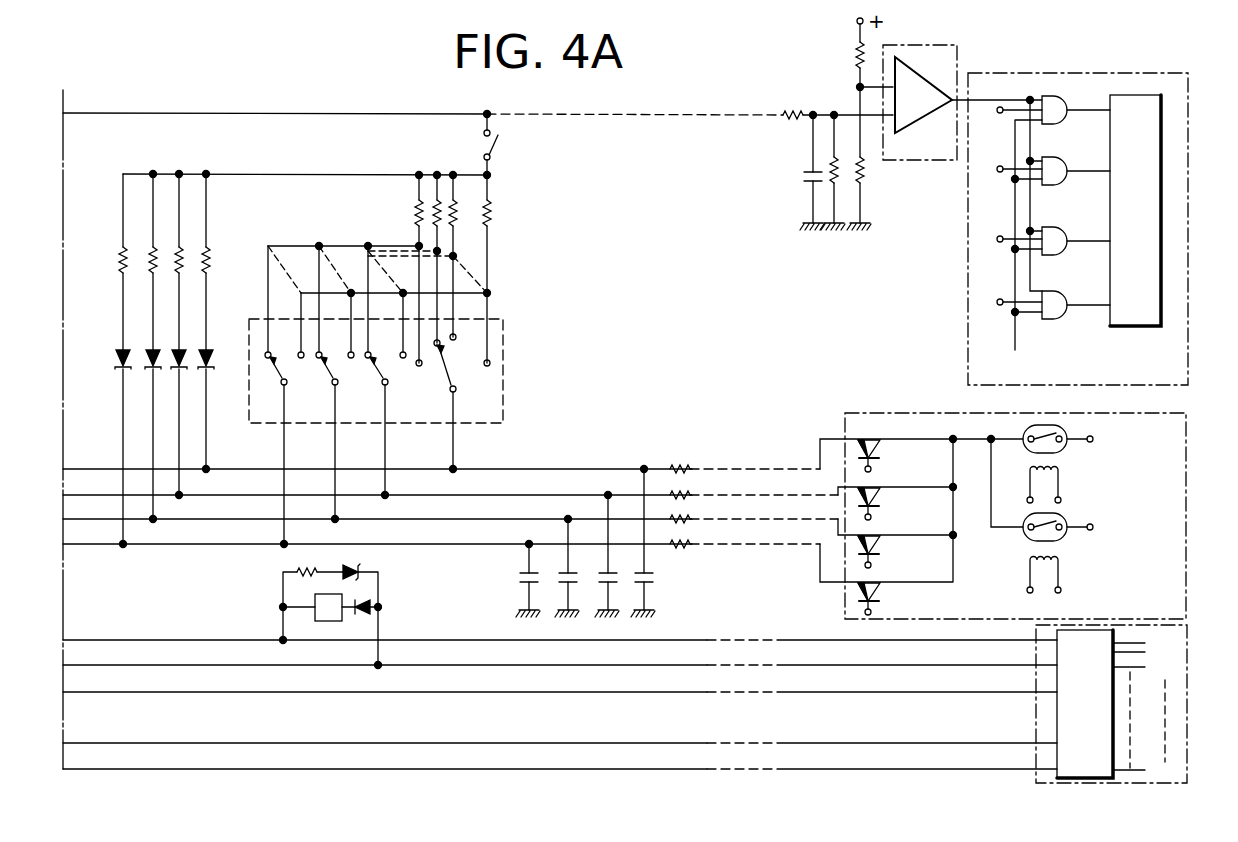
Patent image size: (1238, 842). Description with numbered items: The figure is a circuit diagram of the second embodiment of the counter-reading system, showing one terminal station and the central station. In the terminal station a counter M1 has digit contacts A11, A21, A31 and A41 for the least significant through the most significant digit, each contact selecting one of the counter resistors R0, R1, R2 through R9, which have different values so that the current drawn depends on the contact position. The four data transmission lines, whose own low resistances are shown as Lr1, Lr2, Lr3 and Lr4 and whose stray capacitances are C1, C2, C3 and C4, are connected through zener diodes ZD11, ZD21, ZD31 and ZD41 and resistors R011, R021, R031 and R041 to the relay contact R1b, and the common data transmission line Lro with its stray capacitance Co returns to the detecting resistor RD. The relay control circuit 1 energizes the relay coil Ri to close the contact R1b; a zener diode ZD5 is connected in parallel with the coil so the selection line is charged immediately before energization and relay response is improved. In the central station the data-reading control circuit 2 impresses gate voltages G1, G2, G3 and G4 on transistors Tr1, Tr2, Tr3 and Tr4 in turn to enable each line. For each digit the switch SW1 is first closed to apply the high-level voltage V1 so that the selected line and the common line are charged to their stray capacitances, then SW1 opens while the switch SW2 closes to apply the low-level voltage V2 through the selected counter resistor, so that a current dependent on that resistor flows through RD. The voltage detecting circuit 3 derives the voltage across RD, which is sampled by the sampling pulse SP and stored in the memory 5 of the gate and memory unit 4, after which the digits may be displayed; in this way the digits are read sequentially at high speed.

The relay control circuit 1 is at (1190, 688).
The data-reading control circuit 2 is at (902, 413).
The voltage detecting circuit 3 is at (962, 50).
The display device 4 is at (1099, 229).
The memory 5 is at (1133, 326).
The common data transmission line Lro is at (793, 110).
The stray capacitance of common data transmission line Co is at (804, 178).
The detecting resistor RD is at (840, 178).
The relay contact R1b is at (500, 149).
The counter resistor R0 is at (416, 218).
The counter resistor R1 is at (433, 198).
The counter resistor R2 is at (456, 198).
The counter resistor R9 is at (492, 206).
The resistor R011 is at (211, 256).
The resistor R021 is at (184, 262).
The resistor R031 is at (150, 263).
The resistor R041 is at (120, 273).
The zener diode ZD11 is at (205, 348).
The zener diode ZD21 is at (182, 370).
The zener diode ZD31 is at (146, 362).
The zener diode ZD41 is at (121, 352).
The zener diode ZD5 is at (360, 568).
The relay coil Ri is at (331, 607).
The counter M1 is at (503, 356).
The least-significant-digit contact A11 is at (446, 364).
The second-digit contact A21 is at (386, 370).
The third-digit contact A31 is at (336, 370).
The fourth-digit contact A41 is at (285, 370).
The stray capacitance C1 is at (637, 584).
The stray capacitance C2 is at (600, 584).
The stray capacitance C3 is at (560, 584).
The stray capacitance C4 is at (517, 574).
The line resistance Lr1 is at (676, 464).
The line resistance Lr2 is at (690, 493).
The line resistance Lr3 is at (696, 522).
The line resistance Lr4 is at (676, 550).
The transistor Tr1 is at (876, 450).
The transistor Tr2 is at (876, 498).
The transistor Tr3 is at (876, 546).
The transistor Tr4 is at (876, 593).
The gate voltage G1 is at (883, 470).
The gate voltage G2 is at (883, 518).
The gate voltage G3 is at (883, 566).
The gate voltage G4 is at (883, 612).
The switch SW1 is at (1022, 434).
The switch SW2 is at (1022, 533).
The sampling pulse SP is at (1021, 248).
The high-level voltage V1 is at (1121, 454).
The low-level voltage V2 is at (1118, 541).